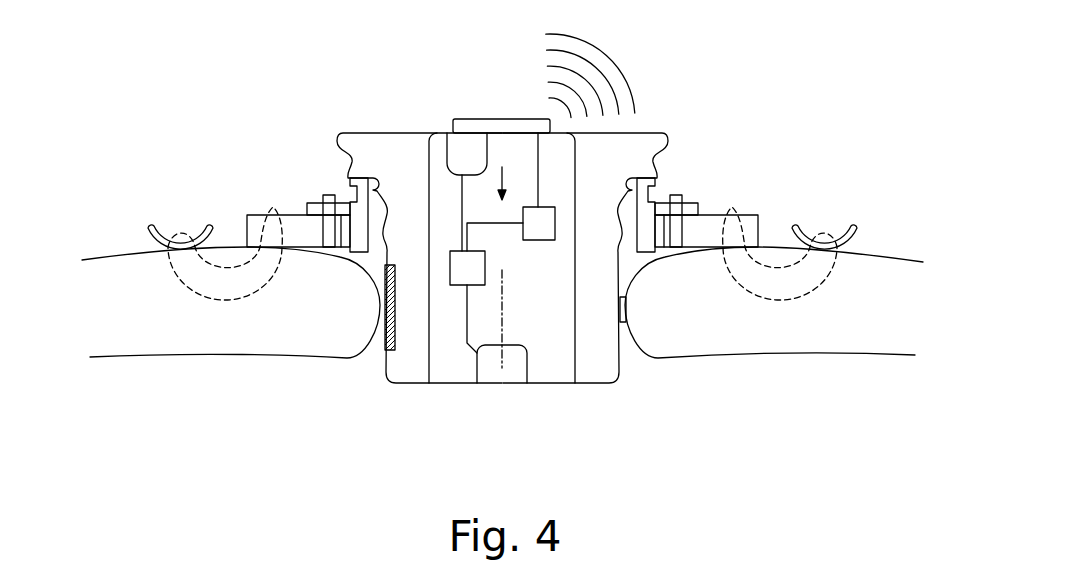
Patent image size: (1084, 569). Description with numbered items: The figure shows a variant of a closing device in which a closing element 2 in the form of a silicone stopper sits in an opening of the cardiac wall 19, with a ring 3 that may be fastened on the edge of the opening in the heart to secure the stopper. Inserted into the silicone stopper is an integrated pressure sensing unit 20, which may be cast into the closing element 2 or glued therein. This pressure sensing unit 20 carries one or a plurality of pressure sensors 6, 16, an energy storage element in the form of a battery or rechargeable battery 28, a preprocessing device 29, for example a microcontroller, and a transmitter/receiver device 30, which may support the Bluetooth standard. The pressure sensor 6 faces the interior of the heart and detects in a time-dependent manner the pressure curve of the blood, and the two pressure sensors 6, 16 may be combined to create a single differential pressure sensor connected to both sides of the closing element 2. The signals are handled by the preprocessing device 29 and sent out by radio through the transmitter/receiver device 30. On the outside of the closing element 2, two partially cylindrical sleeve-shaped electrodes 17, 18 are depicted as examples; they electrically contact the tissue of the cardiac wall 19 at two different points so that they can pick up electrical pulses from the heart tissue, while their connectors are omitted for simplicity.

The closing element 2 is at (597, 383).
The ring 3 is at (335, 184).
The pressure sensor 6 is at (460, 160).
The pressure sensor 16 is at (522, 383).
The electrode 17 is at (395, 310).
The electrode 18 is at (626, 307).
The cardiac wall 19 is at (272, 333).
The pressure sensing unit 20 is at (462, 383).
The battery 28 is at (485, 258).
The preprocessing device 29 is at (541, 206).
The transmitter/receiver device 30 is at (496, 118).